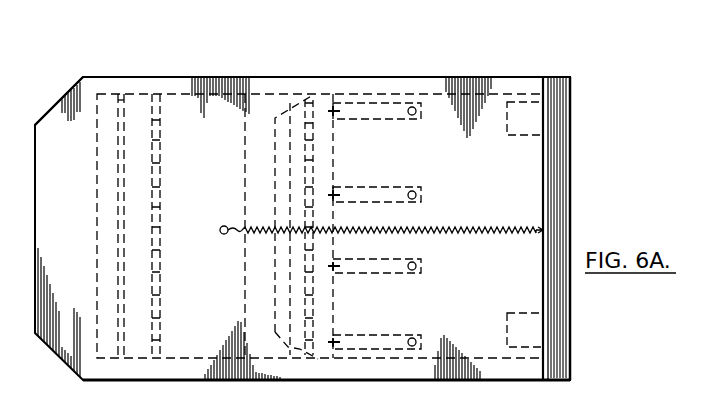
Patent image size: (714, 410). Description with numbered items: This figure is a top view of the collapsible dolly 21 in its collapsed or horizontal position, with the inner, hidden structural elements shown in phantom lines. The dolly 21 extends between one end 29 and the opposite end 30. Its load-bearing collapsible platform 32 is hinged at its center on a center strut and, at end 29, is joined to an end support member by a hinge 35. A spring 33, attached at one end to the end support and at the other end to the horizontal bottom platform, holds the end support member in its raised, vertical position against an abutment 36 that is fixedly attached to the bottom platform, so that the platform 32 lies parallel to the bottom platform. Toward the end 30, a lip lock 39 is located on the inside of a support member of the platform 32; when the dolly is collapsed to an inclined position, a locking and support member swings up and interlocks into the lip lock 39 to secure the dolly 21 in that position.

The collapsible dolly 21 is at (307, 68).
The end of the collapsible dolly 29 is at (571, 185).
The end of the collapsible dolly 30 is at (50, 136).
The collapsible platform 32 is at (463, 382).
The spring 33 is at (492, 240).
The hinge 35 is at (550, 95).
The abutment 36 is at (533, 120).
The lip lock 39 is at (128, 250).